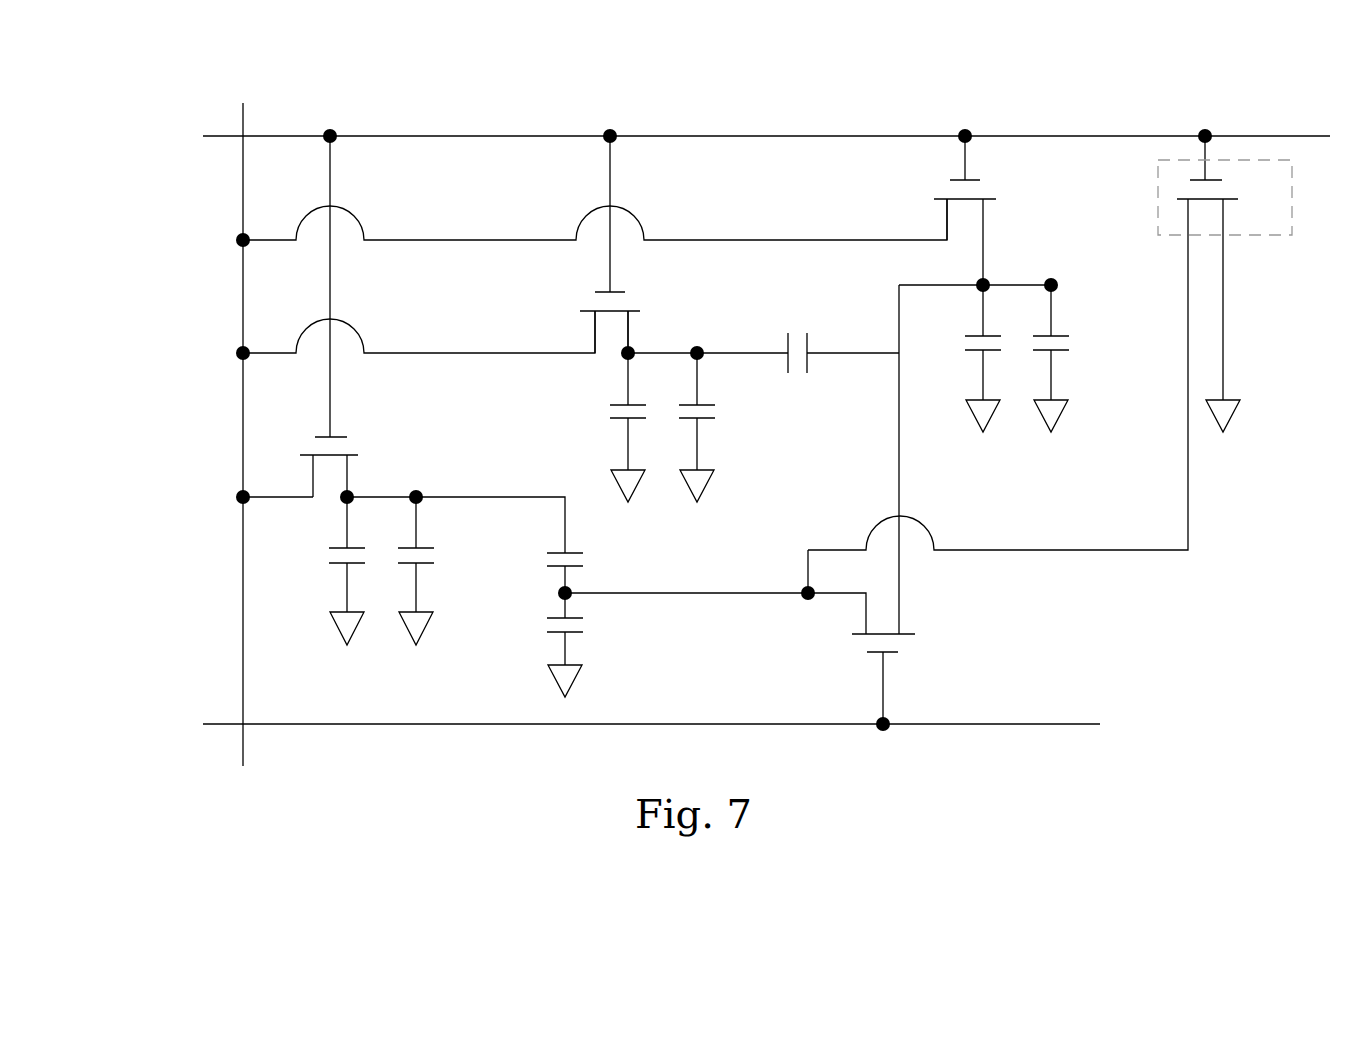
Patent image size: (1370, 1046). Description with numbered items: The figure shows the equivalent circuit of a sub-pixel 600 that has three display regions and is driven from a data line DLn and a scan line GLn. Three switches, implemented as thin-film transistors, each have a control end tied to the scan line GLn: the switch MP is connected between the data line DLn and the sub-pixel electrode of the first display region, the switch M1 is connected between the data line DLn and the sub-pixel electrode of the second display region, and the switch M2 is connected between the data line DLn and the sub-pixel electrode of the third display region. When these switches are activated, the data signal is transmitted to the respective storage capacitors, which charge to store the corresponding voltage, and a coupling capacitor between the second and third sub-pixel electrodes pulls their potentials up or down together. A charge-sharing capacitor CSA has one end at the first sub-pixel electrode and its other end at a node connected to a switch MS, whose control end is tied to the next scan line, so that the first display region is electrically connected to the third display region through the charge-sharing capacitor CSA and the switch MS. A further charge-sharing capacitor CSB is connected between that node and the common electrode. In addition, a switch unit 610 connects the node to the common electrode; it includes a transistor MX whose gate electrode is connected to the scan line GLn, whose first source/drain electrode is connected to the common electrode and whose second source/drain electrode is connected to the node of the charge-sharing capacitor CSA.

The sub-pixel 600 is at (715, 419).
The switch unit 610 is at (1177, 284).
The transistor MX is at (1228, 284).
The switch M1 is at (587, 321).
The switch M2 is at (943, 230).
The switch MP is at (351, 462).
The switch MS is at (905, 677).
The charge-sharing capacitor CSA is at (592, 569).
The charge-sharing capacitor CSB is at (591, 645).
The data line DLn is at (240, 419).
The scan line GLn is at (737, 135).